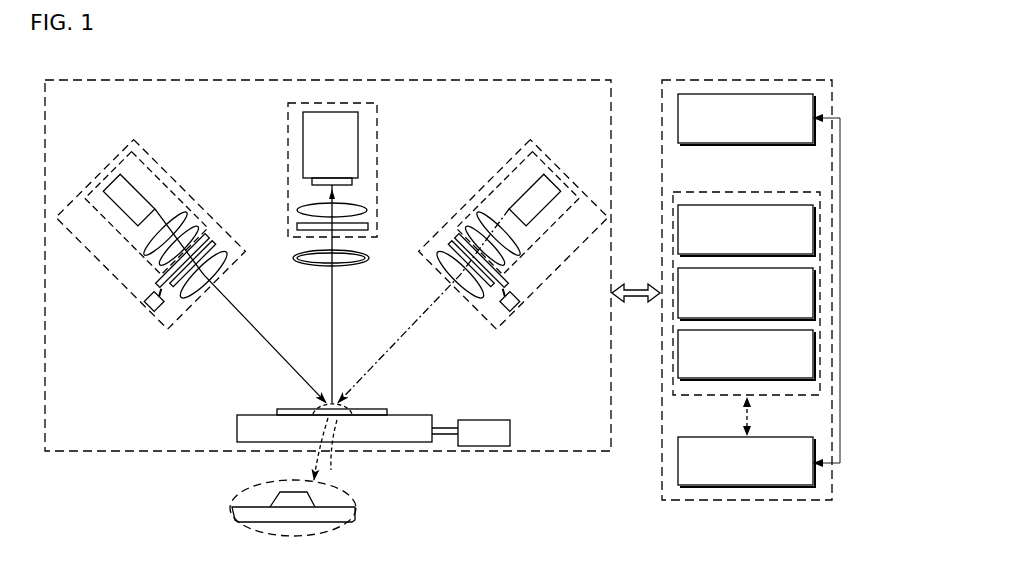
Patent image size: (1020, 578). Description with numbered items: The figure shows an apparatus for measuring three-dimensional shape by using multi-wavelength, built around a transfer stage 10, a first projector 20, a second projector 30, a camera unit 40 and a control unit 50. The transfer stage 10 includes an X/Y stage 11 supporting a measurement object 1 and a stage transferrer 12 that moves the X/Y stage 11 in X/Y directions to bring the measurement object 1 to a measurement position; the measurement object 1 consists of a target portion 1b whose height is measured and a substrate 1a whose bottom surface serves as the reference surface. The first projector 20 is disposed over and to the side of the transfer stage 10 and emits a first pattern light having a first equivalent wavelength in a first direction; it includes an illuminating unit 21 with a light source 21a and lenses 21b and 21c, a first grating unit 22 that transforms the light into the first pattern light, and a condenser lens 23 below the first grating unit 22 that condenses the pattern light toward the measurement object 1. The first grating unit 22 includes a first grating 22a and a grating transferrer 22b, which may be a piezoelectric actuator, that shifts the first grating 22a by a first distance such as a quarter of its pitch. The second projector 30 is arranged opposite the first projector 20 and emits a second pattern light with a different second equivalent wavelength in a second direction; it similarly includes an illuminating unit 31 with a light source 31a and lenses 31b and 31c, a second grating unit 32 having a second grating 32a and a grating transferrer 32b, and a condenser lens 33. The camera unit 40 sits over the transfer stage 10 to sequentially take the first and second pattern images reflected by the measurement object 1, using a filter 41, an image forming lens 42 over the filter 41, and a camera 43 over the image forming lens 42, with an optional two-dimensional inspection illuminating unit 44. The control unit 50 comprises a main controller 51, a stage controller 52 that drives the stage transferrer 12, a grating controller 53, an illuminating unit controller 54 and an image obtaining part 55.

The measurement object 1 is at (310, 459).
The substrate 1a is at (247, 503).
The target portion 1b is at (273, 489).
The transfer stage 10 is at (381, 447).
The X/Y stage 11 is at (418, 444).
The stage transferrer 12 is at (480, 448).
The first projector 20 is at (117, 286).
The illuminating unit 21 is at (238, 181).
The light source 21a is at (143, 183).
The lens 21b is at (178, 208).
The lens 21c is at (198, 222).
The first grating unit 22 is at (162, 314).
The first grating 22a is at (173, 290).
The grating transferrer 22b is at (174, 358).
The condenser lens 23 is at (197, 293).
The second projector 30 is at (548, 288).
The illuminating unit 31 is at (490, 126).
The light source 31a is at (521, 183).
The lens 31b is at (486, 208).
The lens 31c is at (466, 222).
The second grating unit 32 is at (504, 315).
The second grating 32a is at (491, 290).
The grating transferrer 32b is at (520, 308).
The condenser lens 33 is at (467, 296).
The camera unit 40 is at (287, 107).
The filter 41 is at (368, 227).
The image forming lens 42 is at (368, 208).
The camera 43 is at (360, 150).
The two-dimensional inspection illuminating unit 44 is at (370, 256).
The control unit 50 is at (660, 487).
The main controller 51 is at (752, 487).
The stage controller 52 is at (678, 357).
The grating controller 53 is at (678, 273).
The illuminating unit controller 54 is at (678, 218).
The image obtaining part 55 is at (678, 123).